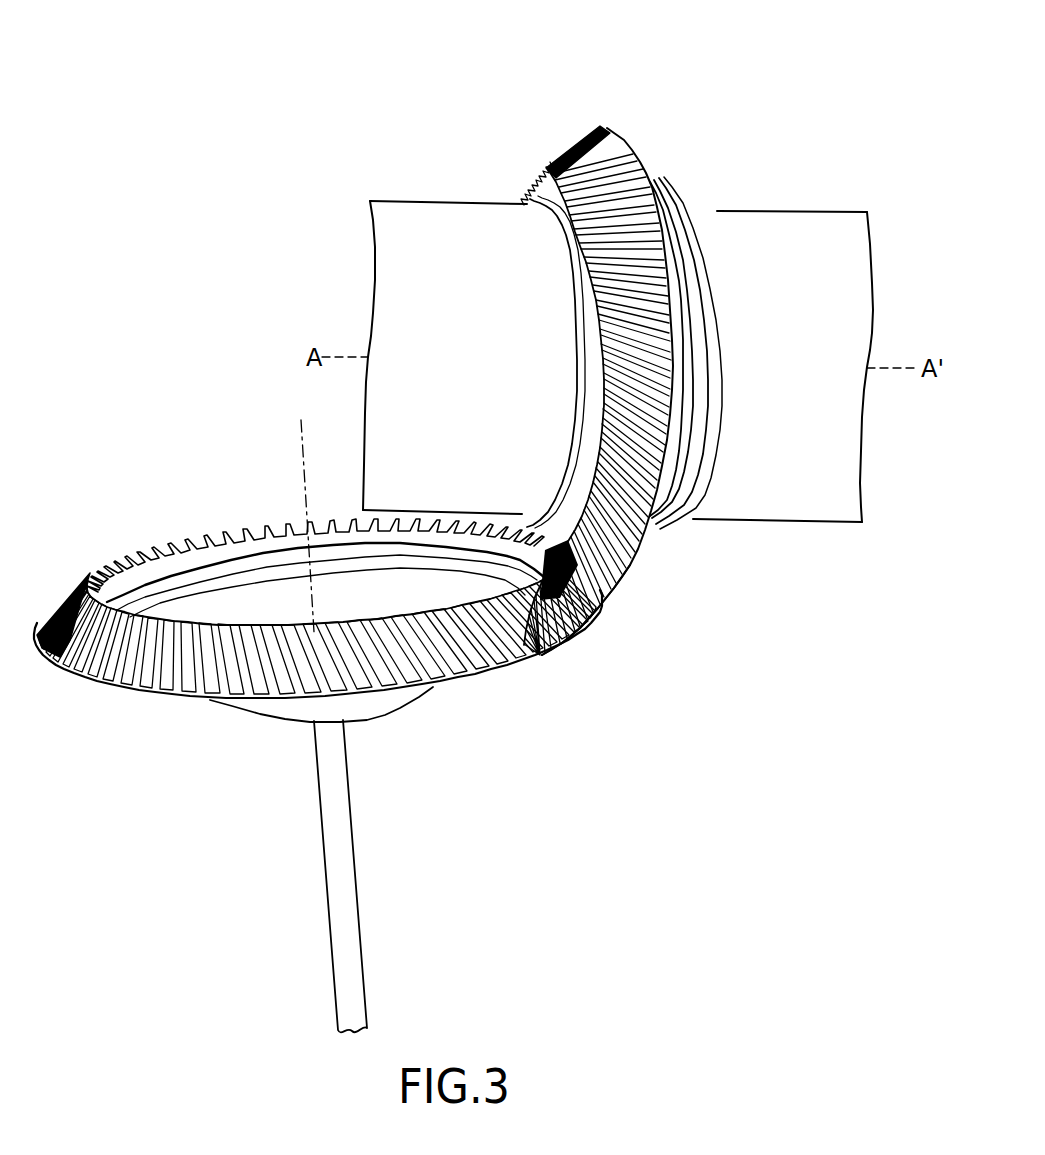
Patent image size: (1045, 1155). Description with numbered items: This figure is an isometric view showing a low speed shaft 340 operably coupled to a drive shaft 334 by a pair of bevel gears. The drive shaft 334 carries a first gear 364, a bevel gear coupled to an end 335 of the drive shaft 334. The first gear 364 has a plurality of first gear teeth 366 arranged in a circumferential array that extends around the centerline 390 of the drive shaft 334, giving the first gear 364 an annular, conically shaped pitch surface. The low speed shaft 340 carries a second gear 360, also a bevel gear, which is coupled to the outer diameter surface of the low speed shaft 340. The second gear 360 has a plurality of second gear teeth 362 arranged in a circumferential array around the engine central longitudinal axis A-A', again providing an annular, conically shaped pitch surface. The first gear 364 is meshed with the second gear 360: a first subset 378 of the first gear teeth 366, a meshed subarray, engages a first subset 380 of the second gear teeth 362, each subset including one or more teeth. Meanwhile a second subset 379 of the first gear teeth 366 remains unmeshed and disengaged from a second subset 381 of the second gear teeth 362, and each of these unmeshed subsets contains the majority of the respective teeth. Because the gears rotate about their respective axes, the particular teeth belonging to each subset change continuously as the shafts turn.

The drive shaft 334 is at (352, 862).
The end of drive shaft 335 is at (359, 731).
The low speed shaft 340 is at (808, 213).
The second gear 360 is at (633, 357).
The second gear teeth 362 is at (650, 507).
The first gear 364 is at (318, 621).
The first gear teeth 366 is at (218, 530).
The first subset of first gear teeth 378 is at (600, 614).
The second subset of first gear teeth 379 is at (148, 525).
The first subset of second gear teeth 380 is at (619, 594).
The second subset of second gear teeth 381 is at (553, 133).
The centerline 390 is at (303, 444).